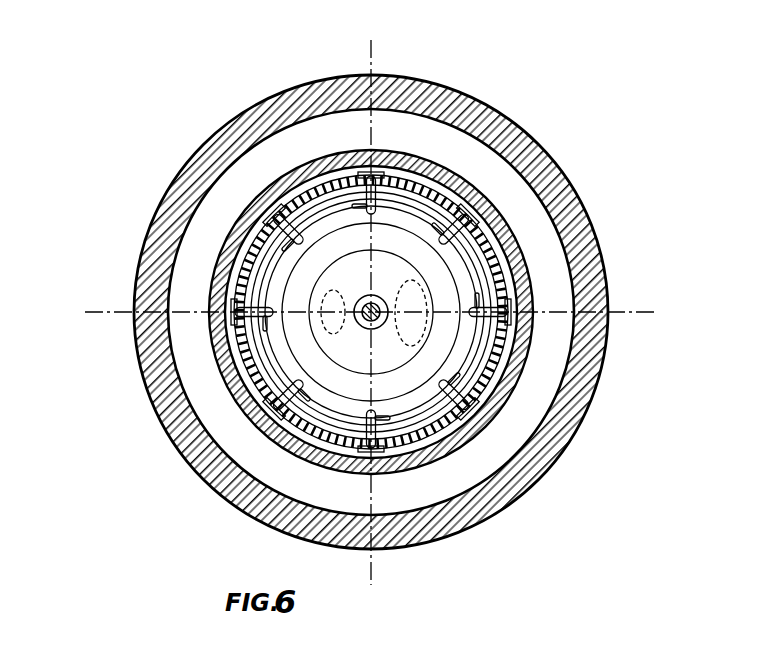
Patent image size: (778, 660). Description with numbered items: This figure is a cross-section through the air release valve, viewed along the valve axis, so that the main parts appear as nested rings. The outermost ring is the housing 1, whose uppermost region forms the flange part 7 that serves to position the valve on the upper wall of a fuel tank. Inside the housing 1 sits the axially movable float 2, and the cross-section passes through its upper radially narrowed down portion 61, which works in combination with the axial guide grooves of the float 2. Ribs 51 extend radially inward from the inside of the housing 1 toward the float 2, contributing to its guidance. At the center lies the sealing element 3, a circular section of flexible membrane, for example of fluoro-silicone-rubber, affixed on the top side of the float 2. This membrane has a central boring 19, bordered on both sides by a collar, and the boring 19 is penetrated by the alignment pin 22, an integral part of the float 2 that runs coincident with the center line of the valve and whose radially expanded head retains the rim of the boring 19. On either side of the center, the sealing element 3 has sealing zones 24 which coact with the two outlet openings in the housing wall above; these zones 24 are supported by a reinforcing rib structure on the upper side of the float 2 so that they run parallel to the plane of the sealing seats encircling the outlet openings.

The housing 1 is at (575, 164).
The float 2 is at (512, 410).
The sealing element 3 is at (388, 268).
The flange part 7 is at (401, 308).
The central boring 19 is at (368, 330).
The alignment pin 22 is at (302, 392).
The sealing zones 24 is at (430, 305).
The ribs 51 is at (375, 178).
The upper radially narrowed down portion 61 is at (508, 120).